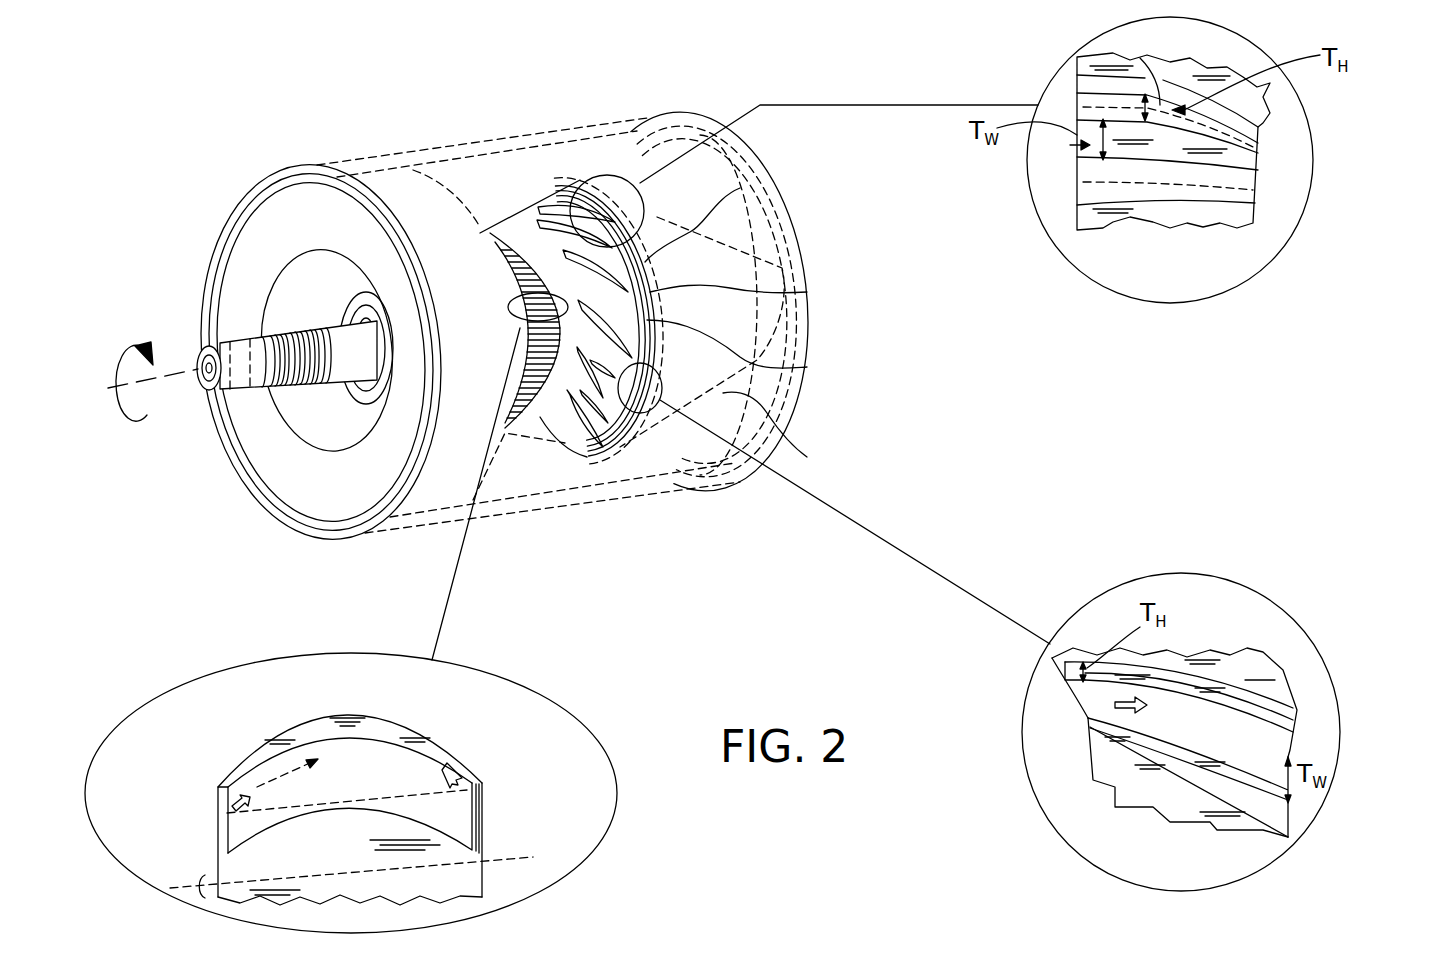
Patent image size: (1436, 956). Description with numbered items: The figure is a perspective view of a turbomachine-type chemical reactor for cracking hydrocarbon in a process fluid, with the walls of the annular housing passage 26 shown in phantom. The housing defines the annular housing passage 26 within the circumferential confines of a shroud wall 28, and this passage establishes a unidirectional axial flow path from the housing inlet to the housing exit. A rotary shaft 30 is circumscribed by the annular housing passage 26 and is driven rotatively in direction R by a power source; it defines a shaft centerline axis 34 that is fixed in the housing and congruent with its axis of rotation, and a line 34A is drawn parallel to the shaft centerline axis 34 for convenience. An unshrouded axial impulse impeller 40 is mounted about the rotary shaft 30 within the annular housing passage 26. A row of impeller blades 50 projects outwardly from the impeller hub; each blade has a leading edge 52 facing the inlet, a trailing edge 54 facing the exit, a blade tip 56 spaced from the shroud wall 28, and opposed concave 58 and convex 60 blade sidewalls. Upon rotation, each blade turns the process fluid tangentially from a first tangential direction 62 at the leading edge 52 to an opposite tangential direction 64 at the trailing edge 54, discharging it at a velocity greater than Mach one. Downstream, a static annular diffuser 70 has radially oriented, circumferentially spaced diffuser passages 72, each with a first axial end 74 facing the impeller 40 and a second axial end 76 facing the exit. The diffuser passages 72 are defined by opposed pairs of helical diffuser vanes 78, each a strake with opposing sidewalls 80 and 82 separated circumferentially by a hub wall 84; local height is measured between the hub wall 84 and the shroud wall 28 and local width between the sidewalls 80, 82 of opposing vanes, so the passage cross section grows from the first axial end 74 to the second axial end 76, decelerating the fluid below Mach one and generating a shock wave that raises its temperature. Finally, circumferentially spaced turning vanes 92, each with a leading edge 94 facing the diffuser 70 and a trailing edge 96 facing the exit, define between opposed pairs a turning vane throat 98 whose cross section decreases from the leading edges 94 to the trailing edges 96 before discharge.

The annular housing passage 26 is at (522, 211).
The shroud wall 28 is at (533, 433).
The rotary shaft 30 is at (337, 353).
The shaft centerline axis 34 is at (160, 378).
The line parallel to the shaft centerline axis 34A is at (258, 814).
The axial impulse impeller 40 is at (487, 232).
The impeller blades 50 is at (565, 440).
The leading edge 52 is at (218, 815).
The trailing edge 54 is at (490, 812).
The blade tip 56 is at (348, 718).
The concave blade sidewall 58 is at (334, 783).
The convex blade sidewall 60 is at (430, 718).
The first tangential direction 62 is at (257, 787).
The opposite tangential direction 64 is at (490, 795).
The static annular diffuser 70 is at (645, 447).
The diffuser passages 72 is at (807, 367).
The first axial end 74 is at (505, 233).
The second axial end 76 is at (640, 255).
The helical diffuser vanes 78 is at (807, 292).
The vane sidewall 80 is at (740, 188).
The vane sidewall 82 is at (1222, 748).
The hub wall 84 is at (1163, 728).
The turning vanes 92 is at (807, 457).
The turning-vane leading edge 94 is at (1080, 107).
The turning-vane trailing edge 96 is at (1262, 135).
The turning vane throat 98 is at (1070, 145).